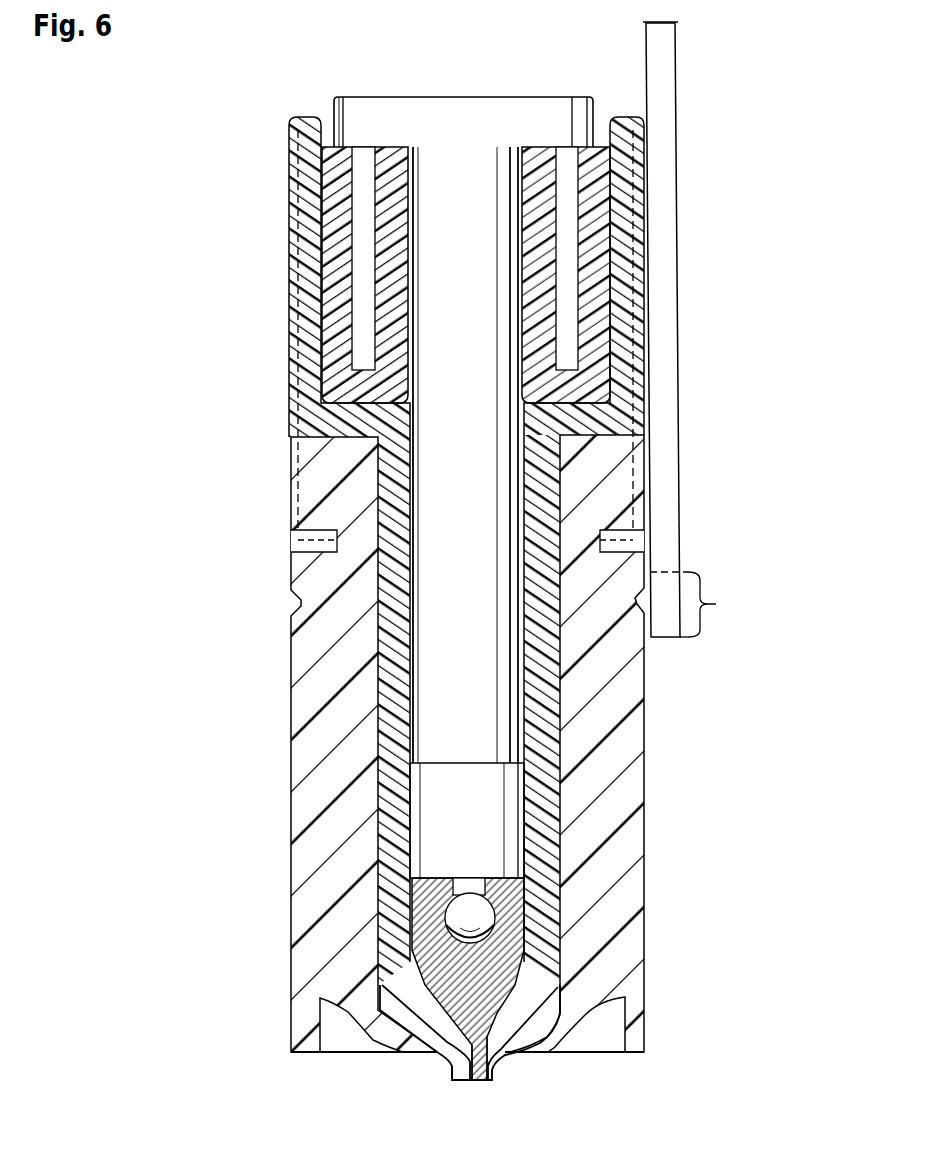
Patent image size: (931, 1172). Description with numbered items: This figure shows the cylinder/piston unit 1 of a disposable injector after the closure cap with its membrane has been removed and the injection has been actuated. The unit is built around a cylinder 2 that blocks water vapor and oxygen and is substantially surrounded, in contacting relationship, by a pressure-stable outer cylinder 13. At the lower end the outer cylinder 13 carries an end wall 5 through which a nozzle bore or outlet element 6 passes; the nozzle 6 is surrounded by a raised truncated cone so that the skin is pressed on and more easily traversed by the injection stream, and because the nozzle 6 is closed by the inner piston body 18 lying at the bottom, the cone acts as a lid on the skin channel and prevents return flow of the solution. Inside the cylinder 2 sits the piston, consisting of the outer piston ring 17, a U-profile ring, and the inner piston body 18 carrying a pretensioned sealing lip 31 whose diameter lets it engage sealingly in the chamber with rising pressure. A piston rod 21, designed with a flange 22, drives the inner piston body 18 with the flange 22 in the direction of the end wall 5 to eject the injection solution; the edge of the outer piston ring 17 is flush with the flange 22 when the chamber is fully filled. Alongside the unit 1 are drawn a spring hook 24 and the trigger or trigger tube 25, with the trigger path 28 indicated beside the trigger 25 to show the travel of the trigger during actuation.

The cylinder/piston unit 1 is at (197, 206).
The cylinder 2 is at (293, 368).
The end wall 5 is at (597, 1055).
The nozzle bore or outlet element 6 is at (460, 1085).
The outer cylinder, pressure-stable 13 is at (615, 747).
The outer piston ring 17 is at (595, 345).
The inner piston body 18 is at (508, 962).
The piston rod 21 is at (485, 660).
The flange of the piston rod 22 is at (508, 820).
The spring hook 24 is at (612, 546).
The trigger, trigger tube 25 is at (665, 446).
The trigger path 28 is at (696, 604).
The sealing lip of inner piston body 31 is at (496, 1060).